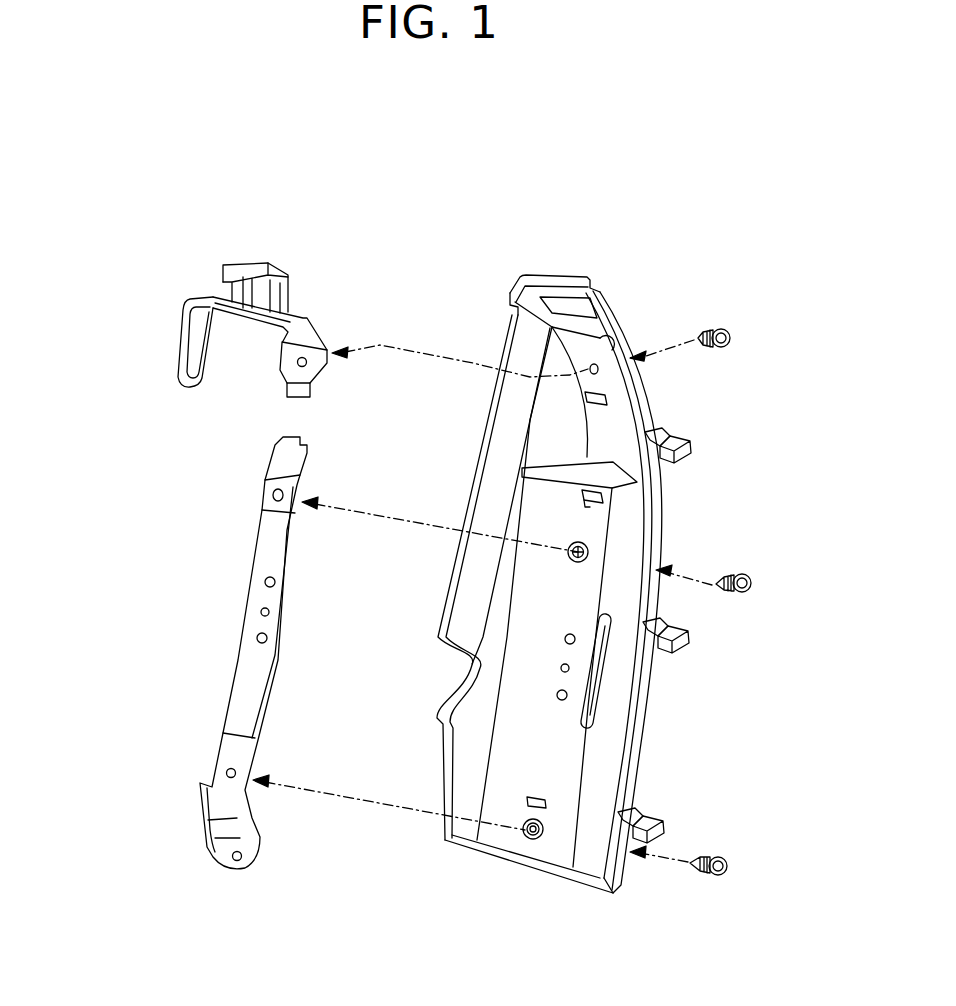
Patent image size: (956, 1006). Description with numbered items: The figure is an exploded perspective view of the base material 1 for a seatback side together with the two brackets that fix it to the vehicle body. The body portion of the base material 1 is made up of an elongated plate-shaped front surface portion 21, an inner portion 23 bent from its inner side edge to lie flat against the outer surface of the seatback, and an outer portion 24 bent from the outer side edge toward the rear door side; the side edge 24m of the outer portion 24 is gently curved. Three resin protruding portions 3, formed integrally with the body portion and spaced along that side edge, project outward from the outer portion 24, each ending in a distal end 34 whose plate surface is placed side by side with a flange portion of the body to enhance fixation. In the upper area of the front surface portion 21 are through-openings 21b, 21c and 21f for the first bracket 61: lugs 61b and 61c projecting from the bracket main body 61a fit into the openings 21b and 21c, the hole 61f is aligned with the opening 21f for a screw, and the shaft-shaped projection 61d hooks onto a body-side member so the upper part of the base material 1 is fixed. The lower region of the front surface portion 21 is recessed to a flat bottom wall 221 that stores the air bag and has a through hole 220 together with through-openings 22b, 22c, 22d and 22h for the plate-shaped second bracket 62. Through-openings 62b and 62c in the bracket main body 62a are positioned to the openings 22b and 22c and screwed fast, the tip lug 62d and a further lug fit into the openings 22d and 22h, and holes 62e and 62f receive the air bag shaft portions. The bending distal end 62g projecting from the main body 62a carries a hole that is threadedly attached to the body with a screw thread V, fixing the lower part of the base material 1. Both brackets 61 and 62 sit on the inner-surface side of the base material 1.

The base material 1 is at (624, 252).
The front surface portion 21 is at (515, 274).
The through-opening 21c is at (563, 303).
The through-opening 21f is at (600, 372).
The through-opening 21b is at (606, 401).
The inner portion 23 is at (513, 422).
The through-opening 22d is at (580, 502).
The through-opening 22b is at (567, 557).
The bottom wall 221 is at (530, 663).
The through hole 220 is at (573, 706).
The through-opening 22c is at (526, 840).
The through-opening 22h is at (538, 810).
The outer portion 24 is at (652, 540).
The side edge 24m is at (630, 347).
The protruding portion 3 is at (662, 460).
The distal end 34 is at (690, 440).
The screw thread V is at (717, 327).
The first bracket 61 is at (196, 248).
The main body 61a is at (303, 313).
The lug 61b is at (287, 397).
The lug 61c is at (260, 265).
The shaft-shaped projection 61d is at (177, 340).
The hole 61f is at (294, 364).
The second bracket 62 is at (232, 886).
The main body 62a is at (250, 668).
The through-opening 62b is at (263, 503).
The through-opening 62c is at (226, 768).
The tip lug 62d is at (272, 494).
The hole 62e is at (265, 582).
The hole 62f is at (258, 637).
The bending distal end 62g is at (207, 837).